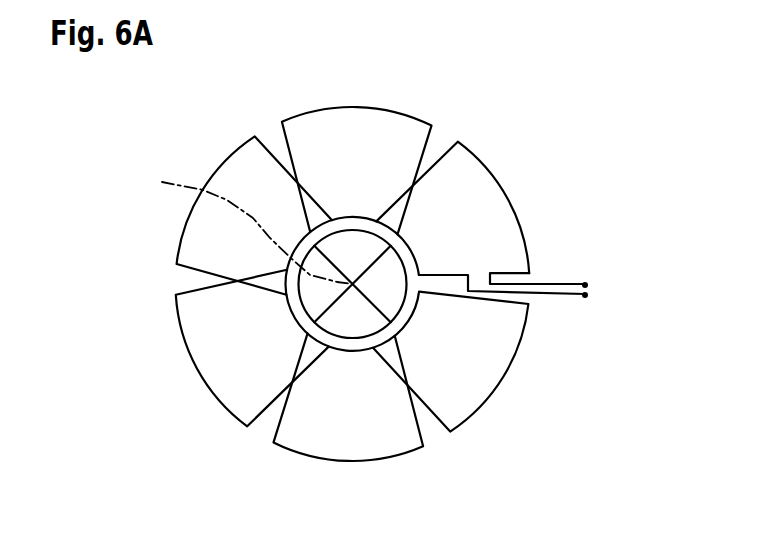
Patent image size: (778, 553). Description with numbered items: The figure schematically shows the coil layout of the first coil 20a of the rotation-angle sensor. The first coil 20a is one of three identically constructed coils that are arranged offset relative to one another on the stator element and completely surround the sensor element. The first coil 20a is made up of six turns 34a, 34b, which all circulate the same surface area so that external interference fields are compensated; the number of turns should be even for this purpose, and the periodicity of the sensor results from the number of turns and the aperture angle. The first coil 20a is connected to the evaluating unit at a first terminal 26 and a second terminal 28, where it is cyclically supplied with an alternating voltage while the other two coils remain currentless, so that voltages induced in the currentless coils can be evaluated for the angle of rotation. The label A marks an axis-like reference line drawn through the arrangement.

The first coil 20a is at (562, 197).
The turns 34a is at (333, 123).
The turns 34b is at (483, 177).
The first terminals 26 is at (585, 285).
The second terminals 28 is at (585, 295).
The axis A is at (246, 221).